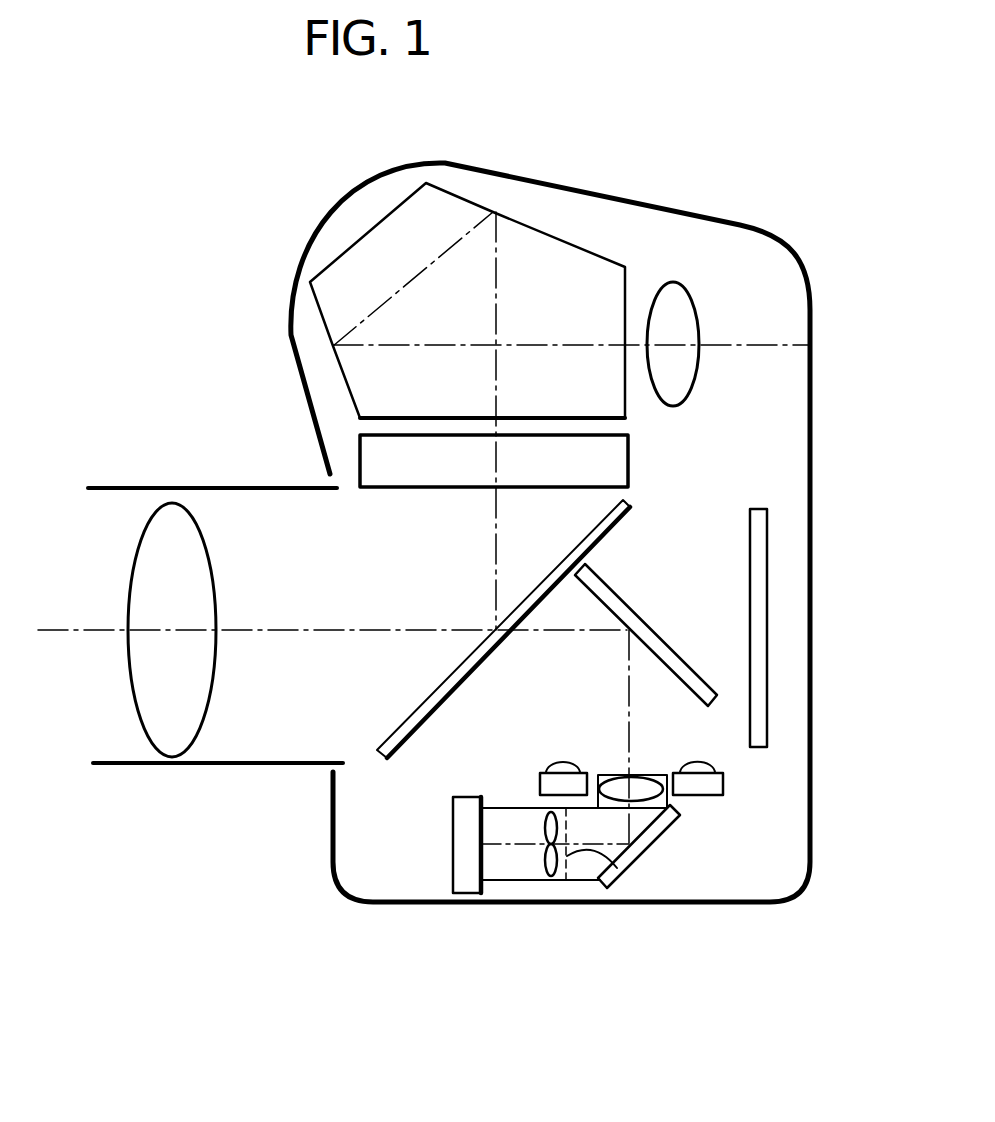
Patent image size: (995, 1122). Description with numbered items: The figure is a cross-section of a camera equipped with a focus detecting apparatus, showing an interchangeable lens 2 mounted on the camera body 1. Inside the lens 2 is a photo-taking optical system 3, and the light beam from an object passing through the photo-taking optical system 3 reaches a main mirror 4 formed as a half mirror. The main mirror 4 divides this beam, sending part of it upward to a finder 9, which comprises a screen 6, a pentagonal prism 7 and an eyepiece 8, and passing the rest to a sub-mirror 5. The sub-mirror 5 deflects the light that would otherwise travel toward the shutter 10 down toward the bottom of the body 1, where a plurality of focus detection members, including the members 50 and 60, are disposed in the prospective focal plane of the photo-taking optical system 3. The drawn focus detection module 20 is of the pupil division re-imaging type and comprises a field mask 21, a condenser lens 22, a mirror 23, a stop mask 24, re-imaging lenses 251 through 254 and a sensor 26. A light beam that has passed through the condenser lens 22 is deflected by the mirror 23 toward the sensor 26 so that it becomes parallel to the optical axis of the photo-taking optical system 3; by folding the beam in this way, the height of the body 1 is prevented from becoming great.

The body 1 is at (813, 590).
The lens 2 is at (130, 488).
The photo-taking optical system 3 is at (207, 546).
The main mirror 4 is at (410, 714).
The sub-mirror 5 is at (680, 650).
The screen 6 is at (630, 468).
The pentagonal prism 7 is at (628, 410).
The eyepiece 8 is at (700, 378).
The finder 9 is at (559, 406).
The shutter 10 is at (750, 557).
The focus detection module 20 is at (517, 870).
The field mask 21 is at (648, 775).
The condenser lens 22 is at (616, 780).
The mirror 23 is at (673, 826).
The stop mask 24 is at (618, 873).
The sensor 26 is at (461, 890).
The focus detection member 50 is at (540, 782).
The focus detection member 60 is at (725, 786).
The re-imaging lens 251 is at (620, 885).
The re-imaging lens 254 is at (552, 876).